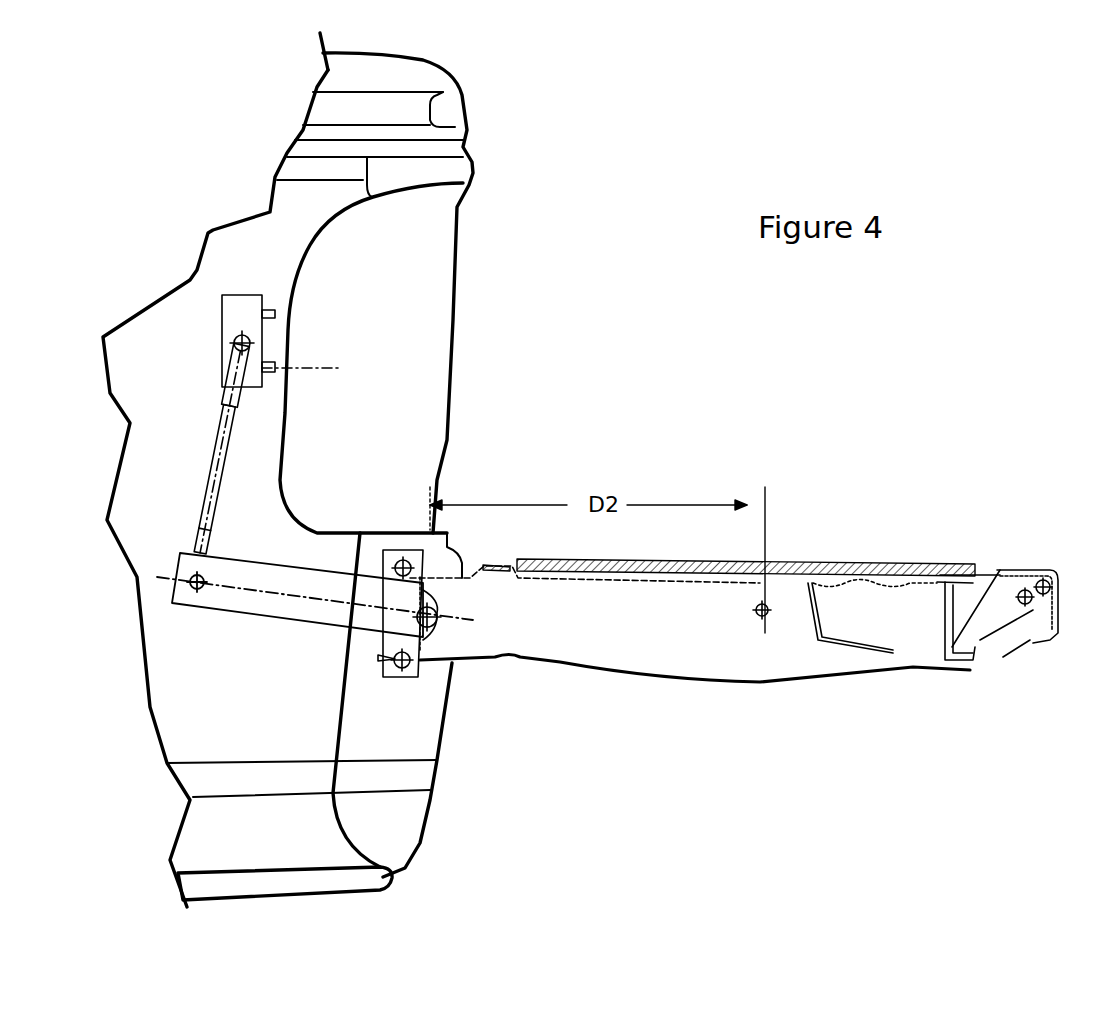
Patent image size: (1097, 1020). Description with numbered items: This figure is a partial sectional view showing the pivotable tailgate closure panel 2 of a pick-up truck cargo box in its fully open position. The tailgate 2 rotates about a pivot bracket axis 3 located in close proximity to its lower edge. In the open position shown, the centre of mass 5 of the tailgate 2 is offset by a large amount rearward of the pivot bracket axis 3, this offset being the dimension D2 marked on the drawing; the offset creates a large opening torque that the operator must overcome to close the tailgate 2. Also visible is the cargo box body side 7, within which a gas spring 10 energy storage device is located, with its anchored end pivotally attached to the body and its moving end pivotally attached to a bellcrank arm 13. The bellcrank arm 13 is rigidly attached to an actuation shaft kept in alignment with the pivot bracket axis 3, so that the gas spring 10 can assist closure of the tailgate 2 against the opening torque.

The pivotable tailgate closure panel 2 is at (818, 563).
The pivot bracket axis 3 is at (455, 623).
The centre of mass 5 is at (762, 625).
The pick-up truck cargo box body side 7 is at (417, 673).
The gas spring 10 is at (235, 433).
The bellcrank arm 13 is at (220, 598).